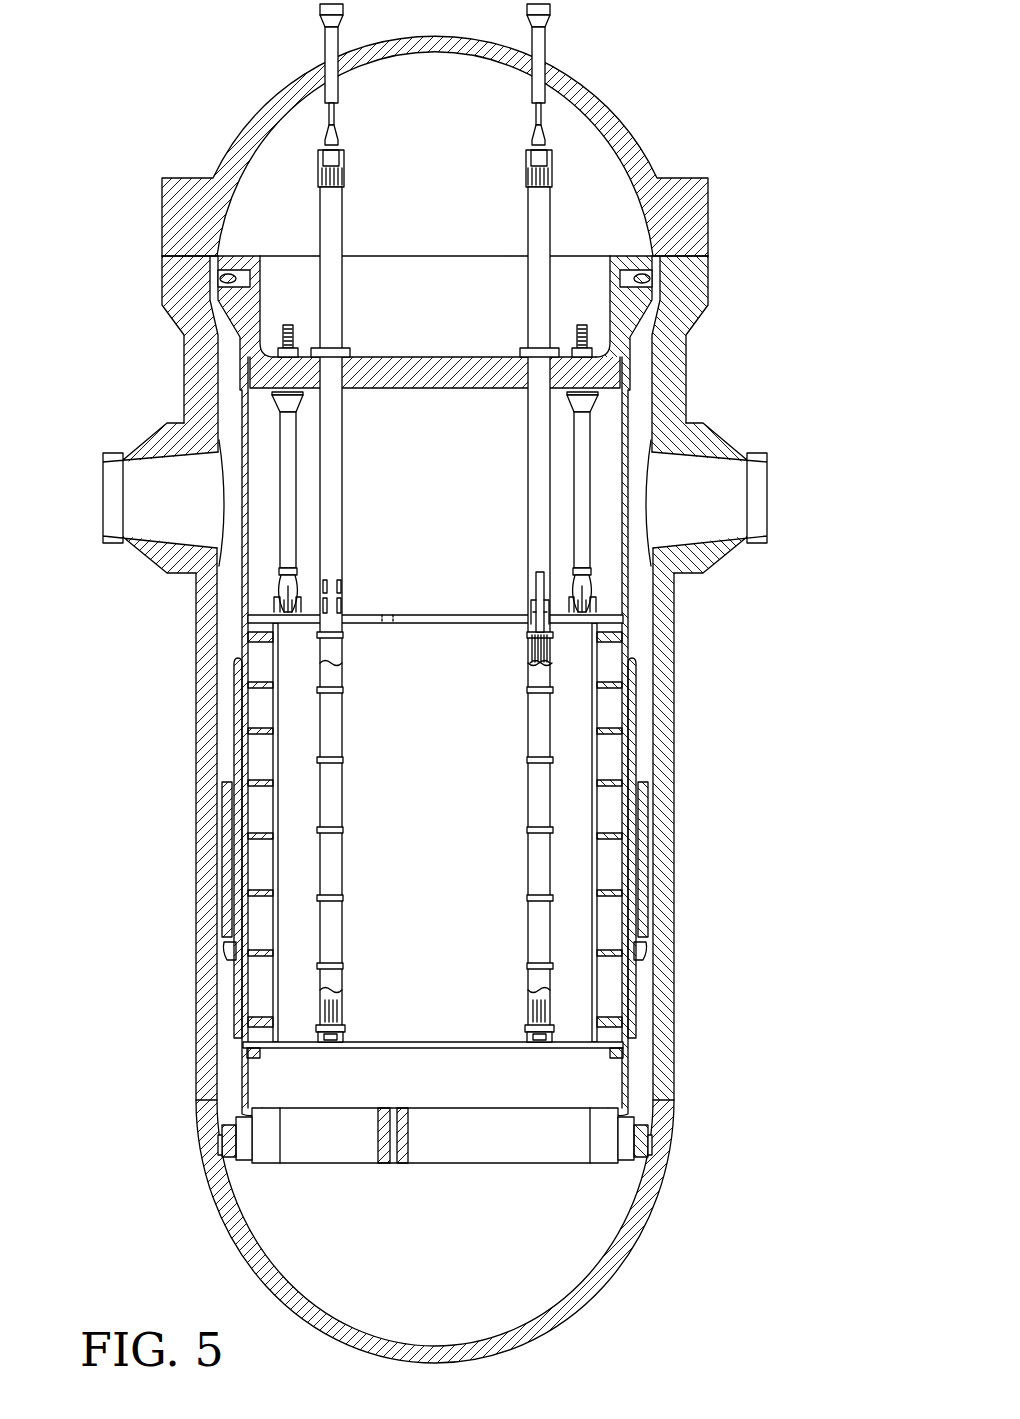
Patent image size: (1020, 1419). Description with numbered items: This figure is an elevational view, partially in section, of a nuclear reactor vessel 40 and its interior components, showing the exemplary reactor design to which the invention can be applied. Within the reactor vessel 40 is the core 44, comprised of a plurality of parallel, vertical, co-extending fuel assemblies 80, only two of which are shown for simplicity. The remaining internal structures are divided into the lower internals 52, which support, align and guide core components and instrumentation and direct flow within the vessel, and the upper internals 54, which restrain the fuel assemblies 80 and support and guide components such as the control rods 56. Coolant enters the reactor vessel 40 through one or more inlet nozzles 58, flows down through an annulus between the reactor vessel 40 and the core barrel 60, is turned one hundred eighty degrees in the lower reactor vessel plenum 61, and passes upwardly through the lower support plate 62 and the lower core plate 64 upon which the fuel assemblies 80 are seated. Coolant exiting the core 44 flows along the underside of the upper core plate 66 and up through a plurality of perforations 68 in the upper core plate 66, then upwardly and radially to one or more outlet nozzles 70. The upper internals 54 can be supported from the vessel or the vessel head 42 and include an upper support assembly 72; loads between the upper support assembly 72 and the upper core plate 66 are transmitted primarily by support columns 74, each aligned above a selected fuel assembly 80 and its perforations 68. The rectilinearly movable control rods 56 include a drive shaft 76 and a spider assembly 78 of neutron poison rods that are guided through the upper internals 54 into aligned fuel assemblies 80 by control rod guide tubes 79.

The reactor vessel 40 is at (677, 690).
The vessel head 42 is at (708, 228).
The core 44 is at (447, 817).
The lower internals 52 is at (447, 1082).
The upper internals 54 is at (447, 457).
The control rods 56 is at (528, 640).
The inlet nozzle 58 is at (152, 437).
The core barrel 60 is at (240, 612).
The lower reactor vessel plenum 61 is at (610, 1221).
The lower support plate 62 is at (480, 1148).
The lower core plate 64 is at (497, 1042).
The upper core plate 66 is at (466, 623).
The perforations 68 is at (391, 615).
The outlet nozzle 70 is at (732, 445).
The upper support assembly 72 is at (615, 256).
The support column 74 is at (297, 496).
The drive shaft 76 is at (535, 580).
The spider assembly 78 is at (531, 616).
The control rod guide tube 79 is at (531, 523).
The fuel assembly 80 is at (342, 729).